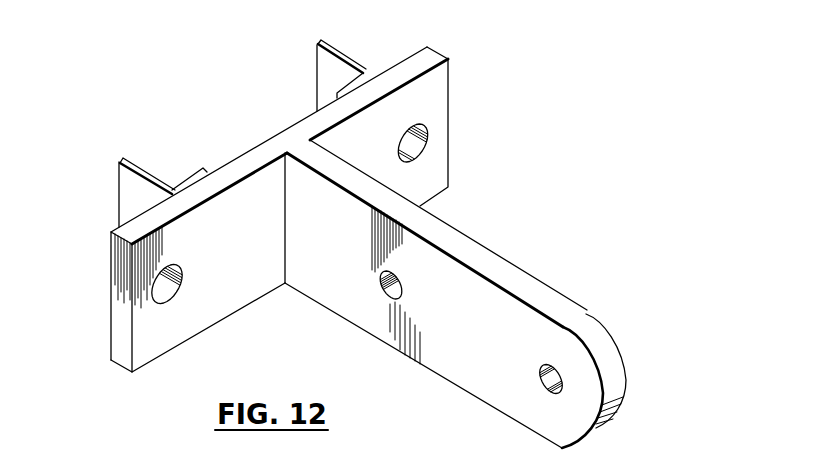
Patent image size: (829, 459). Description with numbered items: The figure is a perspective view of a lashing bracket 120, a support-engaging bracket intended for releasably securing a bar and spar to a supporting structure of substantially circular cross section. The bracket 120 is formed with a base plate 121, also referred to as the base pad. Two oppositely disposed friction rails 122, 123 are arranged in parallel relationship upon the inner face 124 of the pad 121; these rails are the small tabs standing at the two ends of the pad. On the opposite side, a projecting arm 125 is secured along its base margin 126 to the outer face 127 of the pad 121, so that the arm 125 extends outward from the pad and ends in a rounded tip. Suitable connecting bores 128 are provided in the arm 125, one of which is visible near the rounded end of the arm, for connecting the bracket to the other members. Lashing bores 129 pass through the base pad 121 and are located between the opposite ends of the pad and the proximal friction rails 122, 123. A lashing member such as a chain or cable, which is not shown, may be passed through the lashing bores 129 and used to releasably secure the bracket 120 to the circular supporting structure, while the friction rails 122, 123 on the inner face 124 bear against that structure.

The lashing bracket 120 is at (543, 273).
The base plate 121 is at (450, 143).
The friction rail 122 is at (324, 43).
The friction rail 123 is at (122, 158).
The inner face 124 is at (263, 141).
The projecting arm 125 is at (445, 220).
The base margin 126 is at (283, 250).
The outer face 127 is at (153, 360).
The connecting bore 128 is at (541, 372).
The lashing bore 129 is at (423, 127).